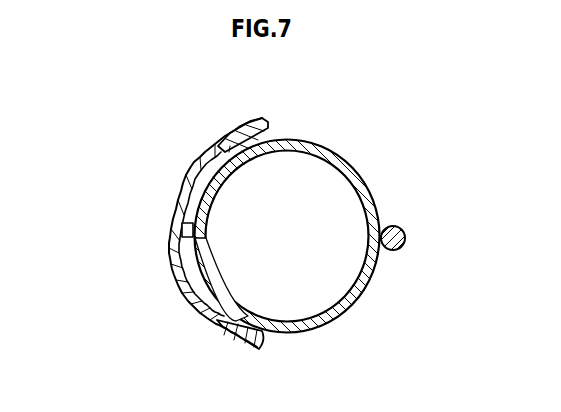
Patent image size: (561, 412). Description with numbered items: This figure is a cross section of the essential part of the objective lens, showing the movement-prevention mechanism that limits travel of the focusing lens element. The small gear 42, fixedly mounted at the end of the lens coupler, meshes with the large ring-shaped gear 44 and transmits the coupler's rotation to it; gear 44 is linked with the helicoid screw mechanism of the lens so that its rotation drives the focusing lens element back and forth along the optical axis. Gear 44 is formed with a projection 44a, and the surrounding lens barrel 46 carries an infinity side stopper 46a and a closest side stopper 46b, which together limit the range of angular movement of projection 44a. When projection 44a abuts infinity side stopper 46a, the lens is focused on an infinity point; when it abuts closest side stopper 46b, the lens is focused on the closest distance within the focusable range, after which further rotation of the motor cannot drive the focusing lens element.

The gear 42 is at (402, 225).
The gear 44 is at (348, 158).
The projection 44a is at (183, 232).
The lens barrel 46 is at (180, 197).
The infinity side stopper 46a is at (213, 146).
The closest side stopper 46b is at (218, 322).